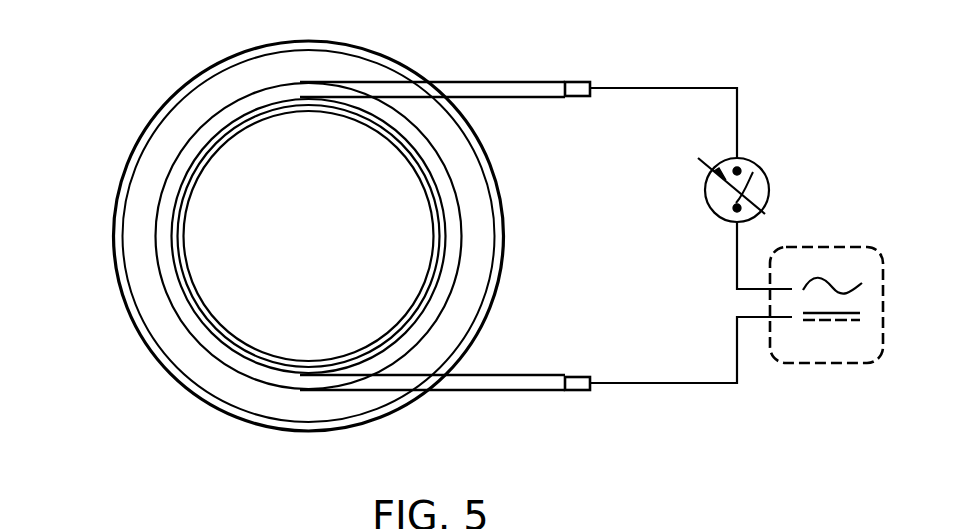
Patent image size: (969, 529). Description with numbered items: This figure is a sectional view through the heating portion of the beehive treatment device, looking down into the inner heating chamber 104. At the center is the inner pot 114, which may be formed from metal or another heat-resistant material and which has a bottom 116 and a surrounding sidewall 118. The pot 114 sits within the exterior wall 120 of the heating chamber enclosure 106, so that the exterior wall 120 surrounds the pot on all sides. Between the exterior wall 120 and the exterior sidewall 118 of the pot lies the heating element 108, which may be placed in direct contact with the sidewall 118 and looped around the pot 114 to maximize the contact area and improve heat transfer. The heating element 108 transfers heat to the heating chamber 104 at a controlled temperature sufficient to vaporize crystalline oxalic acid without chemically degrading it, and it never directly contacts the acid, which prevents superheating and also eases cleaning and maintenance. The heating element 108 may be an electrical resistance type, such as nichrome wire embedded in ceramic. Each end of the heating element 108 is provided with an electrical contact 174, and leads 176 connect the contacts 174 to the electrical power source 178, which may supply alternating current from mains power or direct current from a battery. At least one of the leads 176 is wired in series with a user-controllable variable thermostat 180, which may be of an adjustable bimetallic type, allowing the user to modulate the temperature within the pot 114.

The heating chamber 104 is at (485, 302).
The heating chamber enclosure 106 is at (163, 60).
The heating element 108 is at (190, 140).
The inner pot 114 is at (480, 176).
The bottom 116 is at (332, 248).
The sidewall 118 is at (405, 316).
The exterior wall 120 is at (132, 327).
The electrical contact 174 is at (578, 80).
The leads 176 is at (685, 88).
The electrical power source 178 is at (853, 247).
The variable thermostat 180 is at (755, 162).